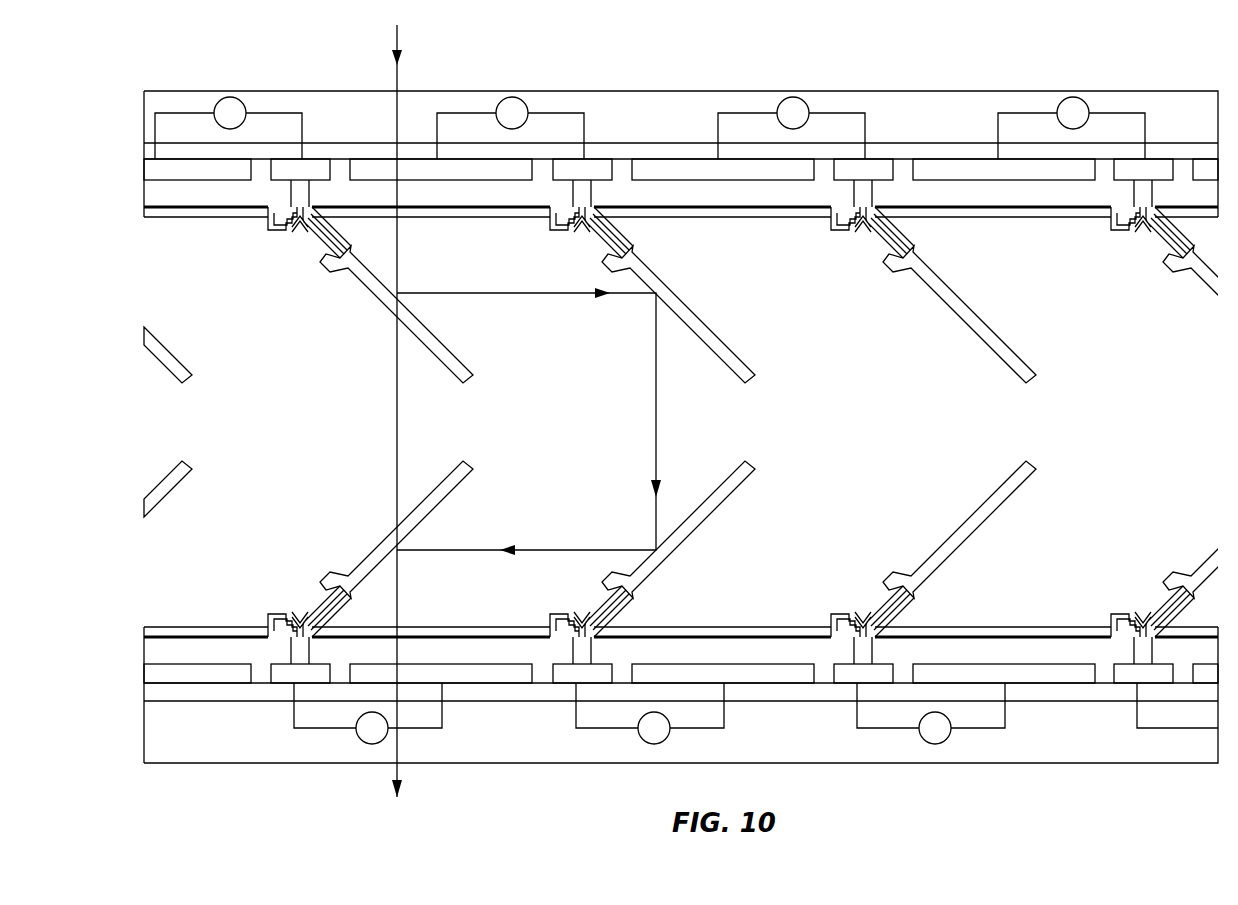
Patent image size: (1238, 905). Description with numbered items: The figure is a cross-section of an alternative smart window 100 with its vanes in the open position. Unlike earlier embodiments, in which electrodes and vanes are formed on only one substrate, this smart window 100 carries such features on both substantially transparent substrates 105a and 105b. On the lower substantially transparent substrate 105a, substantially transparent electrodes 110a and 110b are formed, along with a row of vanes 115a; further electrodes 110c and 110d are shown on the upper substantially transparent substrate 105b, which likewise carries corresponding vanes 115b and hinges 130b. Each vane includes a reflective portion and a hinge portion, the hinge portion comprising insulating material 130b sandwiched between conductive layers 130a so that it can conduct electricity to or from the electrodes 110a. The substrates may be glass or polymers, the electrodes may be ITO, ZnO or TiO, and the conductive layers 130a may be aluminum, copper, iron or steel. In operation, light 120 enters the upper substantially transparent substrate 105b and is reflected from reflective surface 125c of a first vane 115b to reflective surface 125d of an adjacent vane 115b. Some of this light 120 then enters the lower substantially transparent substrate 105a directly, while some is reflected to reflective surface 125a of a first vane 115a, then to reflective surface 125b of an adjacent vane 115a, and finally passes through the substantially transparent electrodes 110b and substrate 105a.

The smart window 100 is at (152, 777).
The substantially transparent substrate 105a is at (845, 738).
The substantially transparent substrate 105b is at (697, 113).
The electrode 110a is at (286, 676).
The substantially transparent electrode 110b is at (455, 676).
The third electrode pad 110c is at (285, 168).
The fourth electrode pad 110d is at (437, 168).
The vane 115a is at (917, 508).
The vane 115b is at (975, 268).
The light 120 is at (401, 64).
The reflective surface 125a is at (715, 490).
The reflective surface 125b is at (437, 522).
The reflective surface 125c is at (437, 332).
The reflective surface 125d is at (707, 343).
The conductive layer 130a is at (872, 617).
The insulating material 130b is at (304, 229).